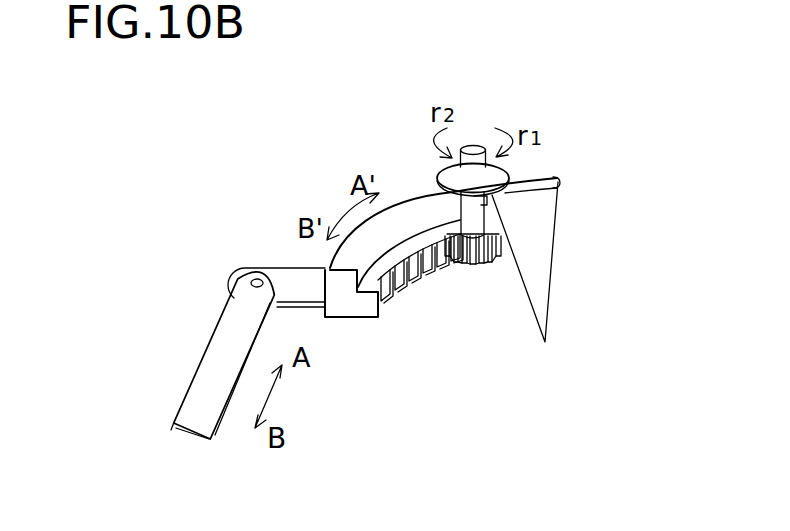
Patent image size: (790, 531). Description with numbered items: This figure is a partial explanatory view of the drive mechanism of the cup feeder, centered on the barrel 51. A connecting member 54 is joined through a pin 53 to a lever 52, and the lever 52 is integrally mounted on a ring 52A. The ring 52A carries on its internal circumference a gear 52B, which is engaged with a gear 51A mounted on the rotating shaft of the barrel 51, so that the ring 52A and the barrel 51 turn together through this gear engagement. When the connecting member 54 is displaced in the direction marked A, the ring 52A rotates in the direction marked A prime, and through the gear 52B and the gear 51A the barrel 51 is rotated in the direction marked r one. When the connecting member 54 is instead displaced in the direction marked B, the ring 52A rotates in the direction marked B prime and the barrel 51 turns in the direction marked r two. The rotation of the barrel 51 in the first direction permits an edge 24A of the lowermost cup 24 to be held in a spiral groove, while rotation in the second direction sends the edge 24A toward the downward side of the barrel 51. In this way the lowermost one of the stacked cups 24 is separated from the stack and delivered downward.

The barrel 51 is at (432, 168).
The gear 51A is at (483, 270).
The lever 52 is at (297, 277).
The ring 52A is at (408, 208).
The gear 52B is at (417, 272).
The pin 53 is at (257, 282).
The connecting member 54 is at (221, 341).
The cup 24 is at (536, 263).
The edge 24A is at (555, 176).